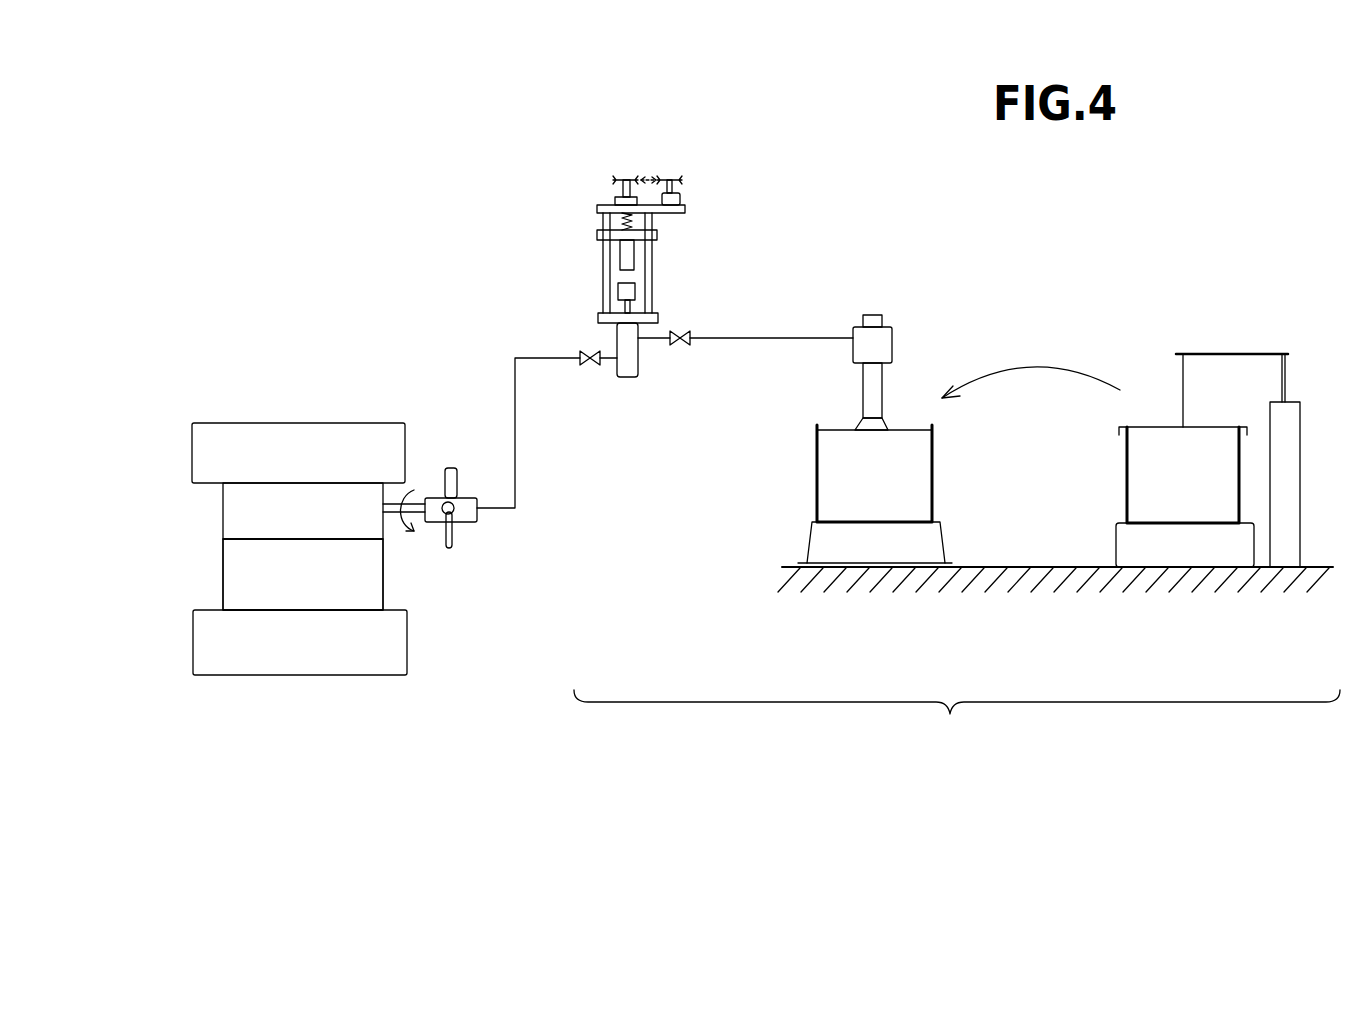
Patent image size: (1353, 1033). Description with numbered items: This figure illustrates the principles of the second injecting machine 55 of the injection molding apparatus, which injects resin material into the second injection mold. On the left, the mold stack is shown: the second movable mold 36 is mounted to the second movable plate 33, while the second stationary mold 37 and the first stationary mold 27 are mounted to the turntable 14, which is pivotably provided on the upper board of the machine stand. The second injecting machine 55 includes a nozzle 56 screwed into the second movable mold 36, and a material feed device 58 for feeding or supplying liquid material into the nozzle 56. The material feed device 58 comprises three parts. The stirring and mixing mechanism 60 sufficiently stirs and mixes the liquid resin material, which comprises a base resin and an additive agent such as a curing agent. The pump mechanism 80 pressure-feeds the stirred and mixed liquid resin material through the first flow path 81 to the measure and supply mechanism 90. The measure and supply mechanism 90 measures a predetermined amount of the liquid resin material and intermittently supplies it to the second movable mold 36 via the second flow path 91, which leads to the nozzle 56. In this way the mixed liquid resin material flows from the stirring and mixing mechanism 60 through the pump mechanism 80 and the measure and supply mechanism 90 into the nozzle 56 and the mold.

The turntable 14 is at (213, 644).
The first stationary mold 27 is at (243, 578).
The second stationary mold 37 is at (303, 574).
The second movable plate 33 is at (205, 452).
The second movable mold 36 is at (240, 510).
The second injecting machine 55 is at (535, 198).
The nozzle 56 is at (415, 500).
The material feed device 58 is at (950, 714).
The stirring and mixing mechanism 60 is at (1175, 330).
The pump mechanism 80 is at (905, 330).
The first flow path 81 is at (747, 338).
The measure and supply mechanism 90 is at (657, 374).
The second flow path 91 is at (537, 358).